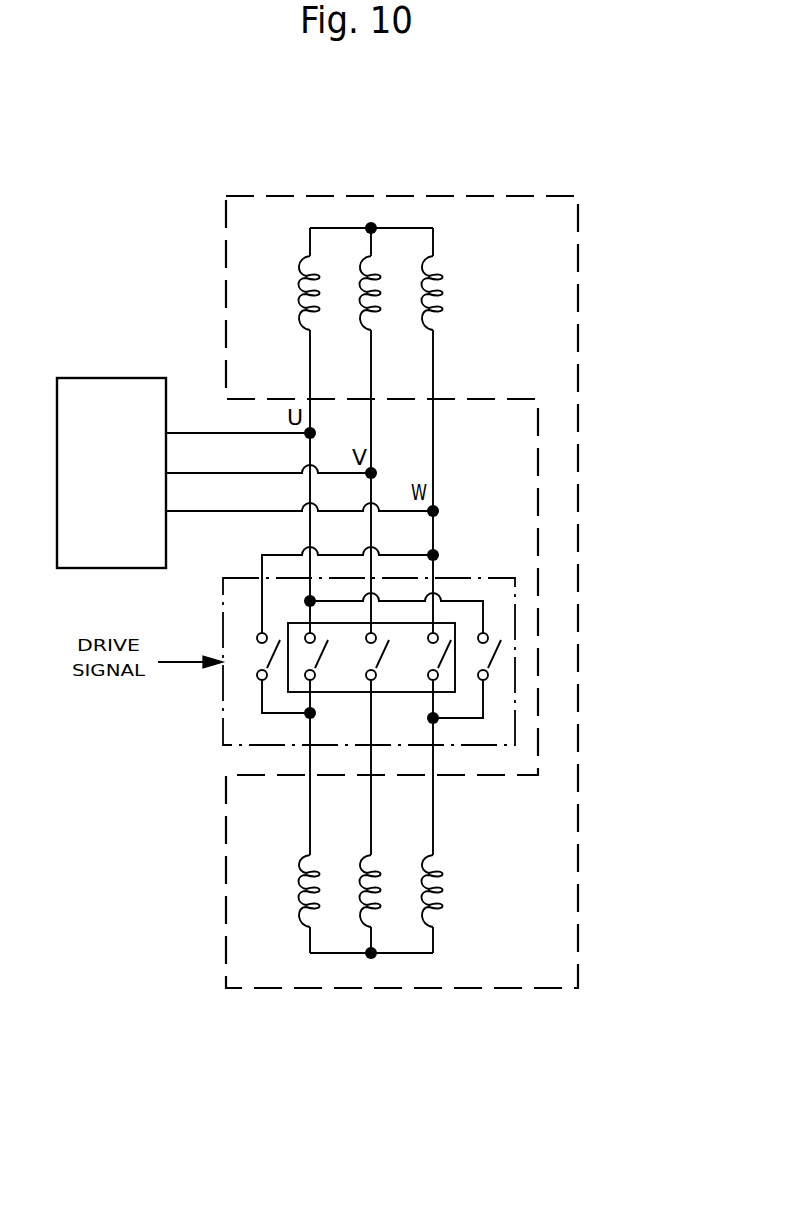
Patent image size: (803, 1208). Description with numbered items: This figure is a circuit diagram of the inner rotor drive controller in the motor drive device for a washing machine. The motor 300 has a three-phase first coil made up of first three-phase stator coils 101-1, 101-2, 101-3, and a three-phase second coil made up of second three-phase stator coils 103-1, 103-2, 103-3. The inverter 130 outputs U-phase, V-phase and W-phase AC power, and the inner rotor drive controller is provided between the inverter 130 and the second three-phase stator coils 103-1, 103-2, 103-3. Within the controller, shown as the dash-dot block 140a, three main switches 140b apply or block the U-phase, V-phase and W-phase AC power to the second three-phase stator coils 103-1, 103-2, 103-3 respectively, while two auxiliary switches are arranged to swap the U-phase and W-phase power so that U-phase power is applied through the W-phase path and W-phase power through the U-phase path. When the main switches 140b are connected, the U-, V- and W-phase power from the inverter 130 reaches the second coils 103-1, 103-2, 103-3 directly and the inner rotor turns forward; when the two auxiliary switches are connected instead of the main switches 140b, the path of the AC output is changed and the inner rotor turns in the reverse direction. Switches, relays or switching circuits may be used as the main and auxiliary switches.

The motor 300 is at (525, 196).
The inverter 130 is at (120, 378).
The first three-phase stator coil 101-1 is at (300, 283).
The first three-phase stator coil 101-2 is at (360, 283).
The first three-phase stator coil 101-3 is at (422, 283).
The second three-phase stator coil 103-1 is at (300, 900).
The second three-phase stator coil 103-2 is at (362, 900).
The second three-phase stator coil 103-3 is at (423, 900).
The switching unit 140a is at (223, 718).
The main switches 140b is at (455, 692).